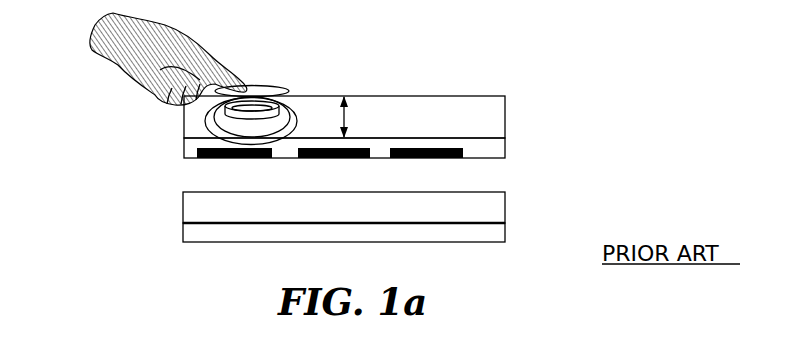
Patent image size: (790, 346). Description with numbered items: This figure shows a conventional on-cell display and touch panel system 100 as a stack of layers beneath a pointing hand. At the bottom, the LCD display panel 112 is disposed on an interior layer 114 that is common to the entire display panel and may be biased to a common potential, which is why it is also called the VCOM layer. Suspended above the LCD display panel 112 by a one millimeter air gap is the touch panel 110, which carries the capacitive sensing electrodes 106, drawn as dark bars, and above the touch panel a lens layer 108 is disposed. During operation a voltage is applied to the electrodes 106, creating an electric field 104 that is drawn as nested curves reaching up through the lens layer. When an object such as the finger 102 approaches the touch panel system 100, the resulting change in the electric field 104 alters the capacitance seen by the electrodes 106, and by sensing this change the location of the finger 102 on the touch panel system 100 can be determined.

The on-cell display and touch panel system 100 is at (79, 117).
The finger 102 is at (237, 70).
The electric field 104 is at (288, 92).
The electrodes 106 is at (199, 159).
The lens layer 108 is at (506, 118).
The touch panel 110 is at (506, 152).
The LCD display panel 112 is at (506, 208).
The interior layer 114 is at (506, 233).